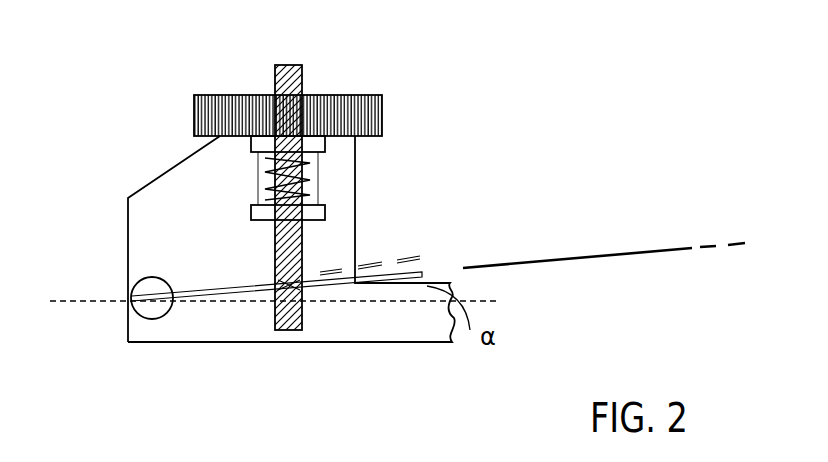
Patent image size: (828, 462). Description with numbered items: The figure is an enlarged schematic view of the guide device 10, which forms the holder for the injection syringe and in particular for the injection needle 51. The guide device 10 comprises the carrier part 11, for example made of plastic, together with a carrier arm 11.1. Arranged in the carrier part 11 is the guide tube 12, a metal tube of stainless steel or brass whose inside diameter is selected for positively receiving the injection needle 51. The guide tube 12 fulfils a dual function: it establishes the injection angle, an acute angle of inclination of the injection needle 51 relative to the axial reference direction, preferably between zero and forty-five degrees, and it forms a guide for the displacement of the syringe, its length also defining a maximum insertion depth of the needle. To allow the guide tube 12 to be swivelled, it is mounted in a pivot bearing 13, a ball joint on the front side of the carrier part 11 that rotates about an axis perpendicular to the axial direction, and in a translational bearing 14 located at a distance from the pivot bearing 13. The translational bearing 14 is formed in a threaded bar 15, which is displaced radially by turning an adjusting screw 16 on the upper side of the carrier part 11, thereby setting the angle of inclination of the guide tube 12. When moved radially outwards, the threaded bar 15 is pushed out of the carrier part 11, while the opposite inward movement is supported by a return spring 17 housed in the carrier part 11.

The guide device 10 is at (218, 215).
The carrier part 11 is at (157, 215).
The carrier arm 11.1 is at (400, 334).
The guide tube 12 is at (378, 272).
The pivot bearing 13 is at (150, 288).
The translational bearing 14 is at (290, 282).
The threaded bar 15 is at (275, 65).
The adjusting screw 16 is at (232, 103).
The return spring 17 is at (305, 163).
The injection needle 51 is at (567, 258).